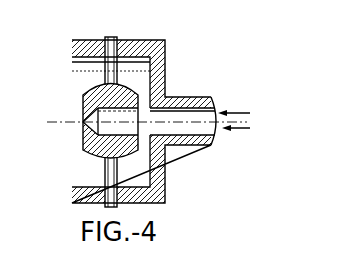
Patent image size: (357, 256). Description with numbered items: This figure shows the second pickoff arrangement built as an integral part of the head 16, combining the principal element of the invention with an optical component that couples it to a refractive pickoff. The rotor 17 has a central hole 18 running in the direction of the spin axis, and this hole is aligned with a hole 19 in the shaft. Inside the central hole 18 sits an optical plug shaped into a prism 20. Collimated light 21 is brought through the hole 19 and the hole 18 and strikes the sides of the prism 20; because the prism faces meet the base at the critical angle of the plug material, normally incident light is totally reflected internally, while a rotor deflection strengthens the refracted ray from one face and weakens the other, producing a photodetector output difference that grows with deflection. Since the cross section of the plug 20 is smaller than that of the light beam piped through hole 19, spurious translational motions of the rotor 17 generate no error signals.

The head 16 is at (129, 37).
The rotor 17 is at (90, 96).
The central hole 18 is at (128, 110).
The hole of the shaft 19 is at (187, 129).
The prism 20 is at (86, 124).
The collimated light 21 is at (247, 95).